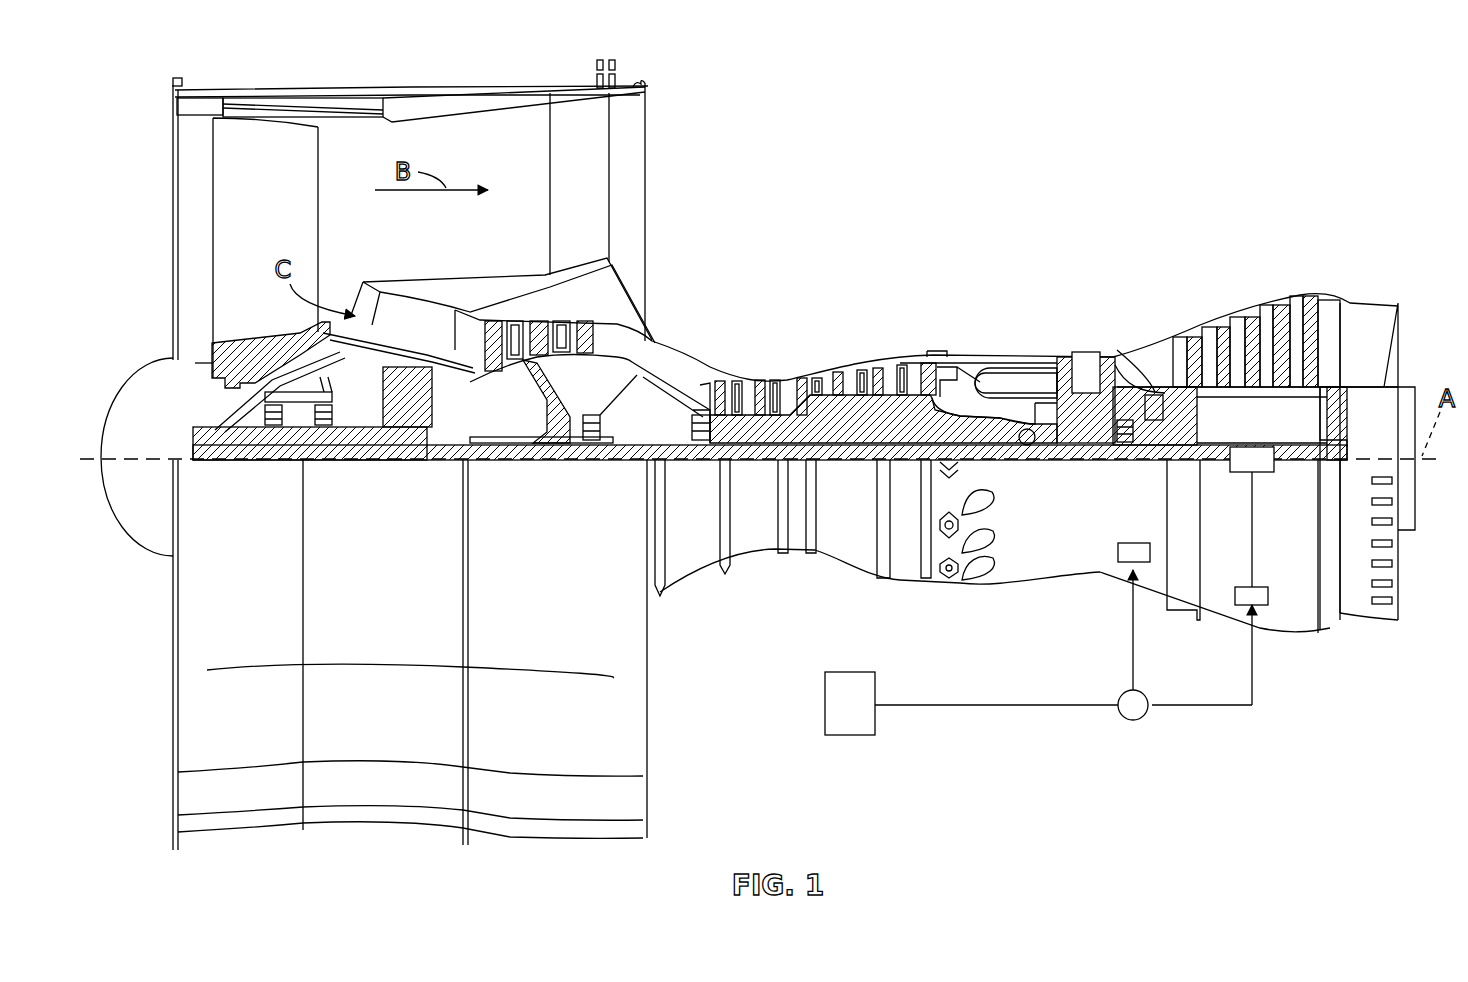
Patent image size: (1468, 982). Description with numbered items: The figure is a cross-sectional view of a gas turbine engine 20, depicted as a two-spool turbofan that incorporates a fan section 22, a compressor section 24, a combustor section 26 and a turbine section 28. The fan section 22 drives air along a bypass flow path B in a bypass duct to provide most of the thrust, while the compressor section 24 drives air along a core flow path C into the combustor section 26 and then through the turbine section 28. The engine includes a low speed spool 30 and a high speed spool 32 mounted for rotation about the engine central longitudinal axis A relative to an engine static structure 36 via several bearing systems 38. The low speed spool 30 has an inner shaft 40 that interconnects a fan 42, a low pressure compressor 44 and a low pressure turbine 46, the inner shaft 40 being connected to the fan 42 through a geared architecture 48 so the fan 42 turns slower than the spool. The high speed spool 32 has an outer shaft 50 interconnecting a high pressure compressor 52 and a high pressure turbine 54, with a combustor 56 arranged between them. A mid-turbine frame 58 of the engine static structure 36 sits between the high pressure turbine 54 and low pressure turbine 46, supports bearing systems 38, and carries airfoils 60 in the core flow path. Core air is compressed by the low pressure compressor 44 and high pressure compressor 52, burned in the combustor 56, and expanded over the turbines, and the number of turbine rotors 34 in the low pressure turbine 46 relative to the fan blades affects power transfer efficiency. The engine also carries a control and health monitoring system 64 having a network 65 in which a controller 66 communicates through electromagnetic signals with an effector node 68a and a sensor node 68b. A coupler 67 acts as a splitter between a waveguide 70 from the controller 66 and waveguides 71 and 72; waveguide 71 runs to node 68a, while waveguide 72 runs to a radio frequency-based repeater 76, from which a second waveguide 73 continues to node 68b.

The gas turbine engine 20 is at (1222, 128).
The fan section 22 is at (445, 84).
The compressor section 24 is at (835, 280).
The combustor section 26 is at (1003, 280).
The turbine section 28 is at (1148, 257).
The low speed spool 30 is at (866, 460).
The high speed spool 32 is at (925, 408).
The turbine rotors 34 is at (1183, 402).
The engine static structure 36 is at (905, 580).
The bearing systems 38 is at (275, 430).
The inner shaft 40 is at (660, 456).
The fan 42 is at (259, 210).
The low pressure compressor 44 is at (560, 335).
The low pressure turbine 46 is at (1252, 312).
The geared architecture 48 is at (410, 425).
The outer shaft 50 is at (1030, 445).
The high pressure compressor 52 is at (825, 418).
The high pressure turbine 54 is at (1088, 355).
The combustor 56 is at (1010, 373).
The mid-turbine frame 58 is at (1140, 343).
The airfoils 60 is at (1132, 365).
The control and health monitoring system 64 is at (1207, 750).
The network 65 is at (1324, 720).
The controller 66 is at (828, 702).
The coupler 67 is at (1130, 722).
The effector node 68a is at (1115, 552).
The sensor node 68b is at (1260, 472).
The waveguide 70 is at (947, 708).
The waveguide 71 is at (1130, 638).
The first waveguide 72 is at (1256, 683).
The second waveguide 73 is at (1252, 548).
The radio frequency-based repeater 76 is at (1262, 605).